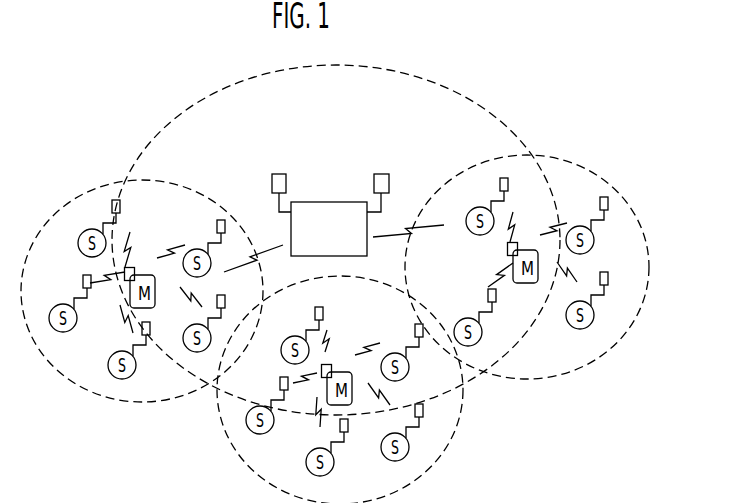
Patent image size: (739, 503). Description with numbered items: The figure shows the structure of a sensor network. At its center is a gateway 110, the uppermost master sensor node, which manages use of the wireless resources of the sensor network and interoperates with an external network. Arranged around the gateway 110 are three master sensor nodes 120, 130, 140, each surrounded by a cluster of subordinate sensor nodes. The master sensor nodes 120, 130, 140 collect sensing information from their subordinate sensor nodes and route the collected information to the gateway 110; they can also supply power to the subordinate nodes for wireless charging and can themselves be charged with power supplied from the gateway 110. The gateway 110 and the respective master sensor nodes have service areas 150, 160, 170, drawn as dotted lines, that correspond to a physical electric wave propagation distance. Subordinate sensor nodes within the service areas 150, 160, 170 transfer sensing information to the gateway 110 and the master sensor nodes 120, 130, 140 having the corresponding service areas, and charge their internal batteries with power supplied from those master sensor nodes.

The gateway 110 is at (330, 202).
The master sensor node 120 is at (154, 283).
The master sensor node 130 is at (351, 379).
The master sensor node 140 is at (510, 263).
The service area 150 is at (96, 184).
The service area 160 is at (238, 449).
The service area 170 is at (600, 173).